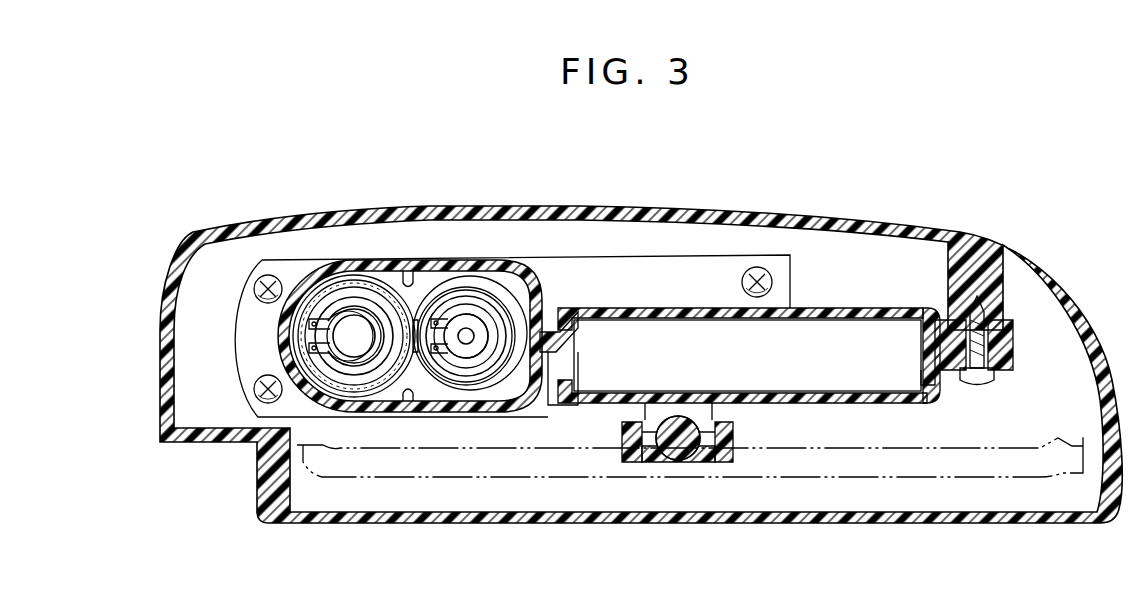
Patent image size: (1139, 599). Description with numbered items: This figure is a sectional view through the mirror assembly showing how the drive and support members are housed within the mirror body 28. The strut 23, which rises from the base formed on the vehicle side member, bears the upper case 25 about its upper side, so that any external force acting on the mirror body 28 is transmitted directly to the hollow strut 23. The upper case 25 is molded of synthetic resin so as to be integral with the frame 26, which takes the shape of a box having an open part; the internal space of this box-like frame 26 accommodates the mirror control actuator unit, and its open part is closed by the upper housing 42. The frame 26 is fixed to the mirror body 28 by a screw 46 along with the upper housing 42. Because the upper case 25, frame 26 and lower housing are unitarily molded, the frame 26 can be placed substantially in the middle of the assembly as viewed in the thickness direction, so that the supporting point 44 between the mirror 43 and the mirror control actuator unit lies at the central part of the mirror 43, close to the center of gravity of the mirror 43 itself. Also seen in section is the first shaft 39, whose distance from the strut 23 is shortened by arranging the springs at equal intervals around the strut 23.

The mirror body 28 is at (597, 207).
The upper case 25 is at (372, 260).
The frame 26 is at (843, 308).
The strut 23 is at (356, 352).
The first shaft 39 is at (467, 342).
The upper housing 42 is at (875, 404).
The mirror 43 is at (586, 482).
The supporting point 44 is at (686, 450).
The screw 46 is at (977, 384).